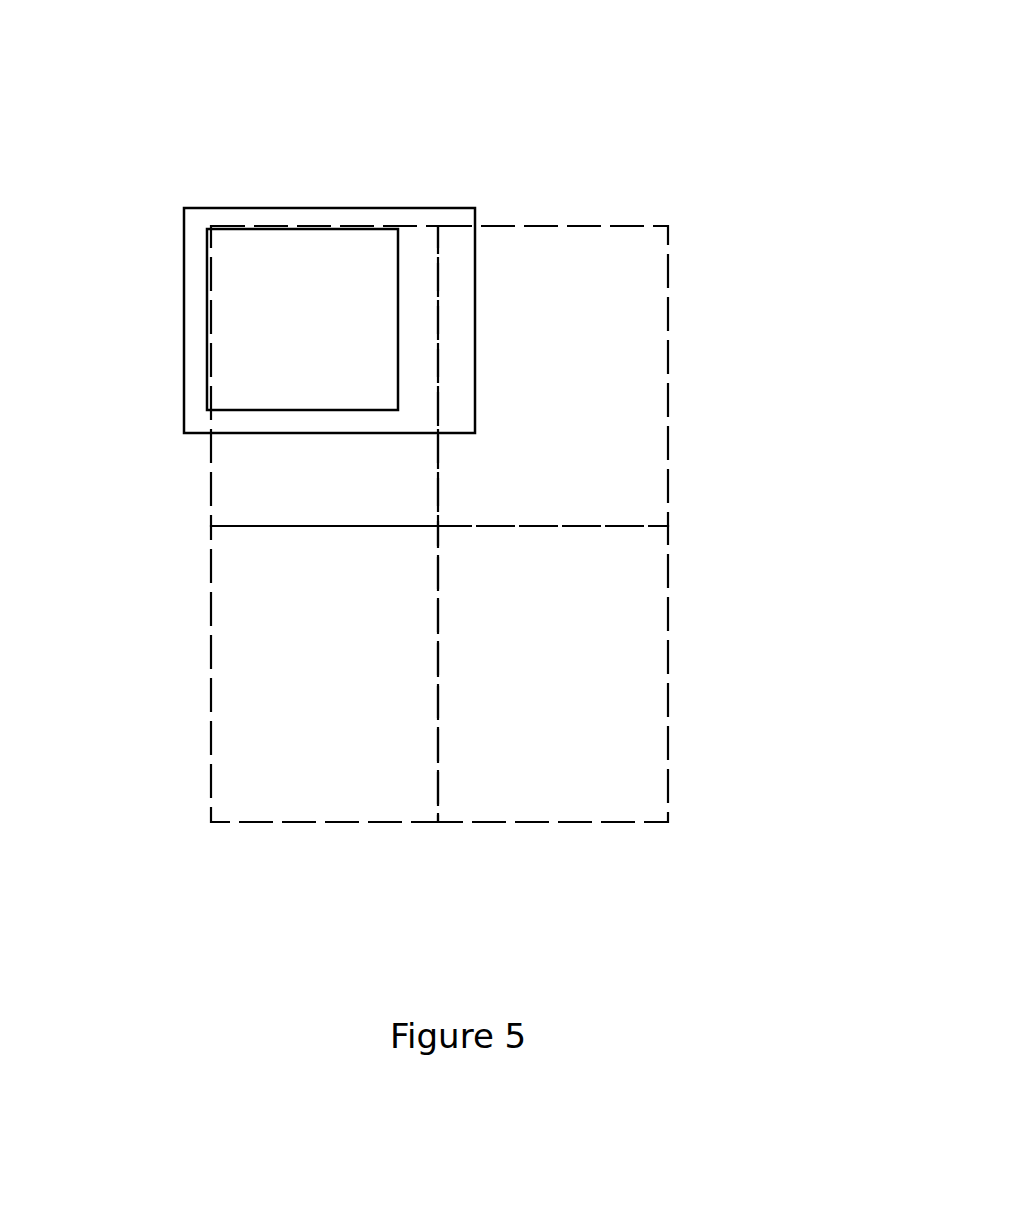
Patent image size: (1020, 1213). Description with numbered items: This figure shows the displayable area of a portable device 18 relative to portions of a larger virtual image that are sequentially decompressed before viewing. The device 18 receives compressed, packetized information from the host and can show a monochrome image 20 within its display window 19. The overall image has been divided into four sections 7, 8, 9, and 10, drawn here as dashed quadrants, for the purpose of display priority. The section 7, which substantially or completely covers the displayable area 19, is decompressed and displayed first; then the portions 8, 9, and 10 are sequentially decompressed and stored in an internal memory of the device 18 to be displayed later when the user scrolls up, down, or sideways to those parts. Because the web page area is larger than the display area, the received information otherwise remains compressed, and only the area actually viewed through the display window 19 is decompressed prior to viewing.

The section 7 is at (230, 480).
The section 8 is at (600, 270).
The section 9 is at (270, 790).
The section 10 is at (610, 772).
The device 18 is at (475, 208).
The display window 19 is at (232, 224).
The monochrome image 20 is at (285, 262).